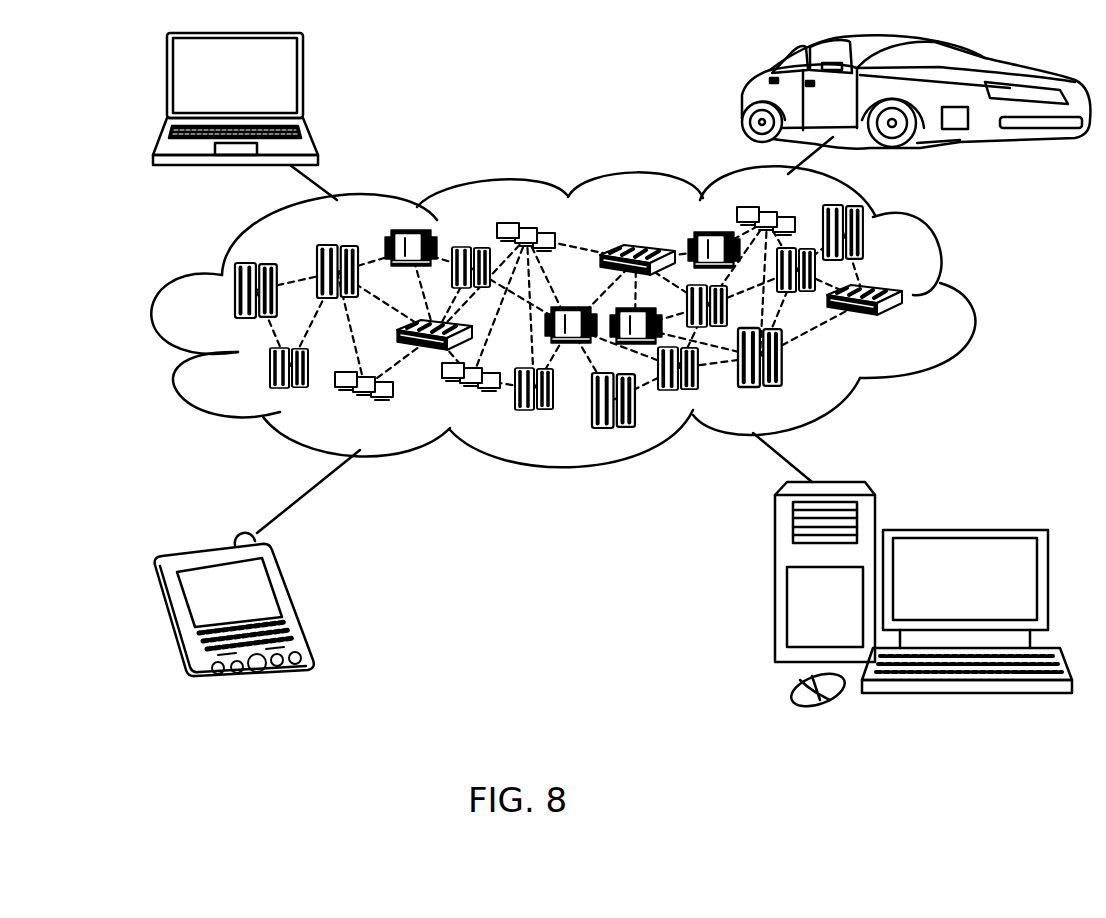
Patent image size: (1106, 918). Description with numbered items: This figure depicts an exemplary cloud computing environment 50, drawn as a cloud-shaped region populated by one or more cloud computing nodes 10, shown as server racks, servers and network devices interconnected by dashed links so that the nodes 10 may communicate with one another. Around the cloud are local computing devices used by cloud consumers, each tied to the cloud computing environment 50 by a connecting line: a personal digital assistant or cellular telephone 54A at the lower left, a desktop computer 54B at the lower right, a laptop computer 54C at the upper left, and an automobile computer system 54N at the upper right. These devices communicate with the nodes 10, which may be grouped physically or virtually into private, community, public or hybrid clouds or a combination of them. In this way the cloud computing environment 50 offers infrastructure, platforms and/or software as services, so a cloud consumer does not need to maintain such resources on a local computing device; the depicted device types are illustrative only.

The personal digital assistant or cellular telephone 54A is at (292, 603).
The desktop computer 54B is at (960, 530).
The laptop computer 54C is at (305, 82).
The automobile computer system 54N is at (746, 96).
The cloud computing environment 50 is at (960, 294).
The cloud computing node 10 is at (903, 323).